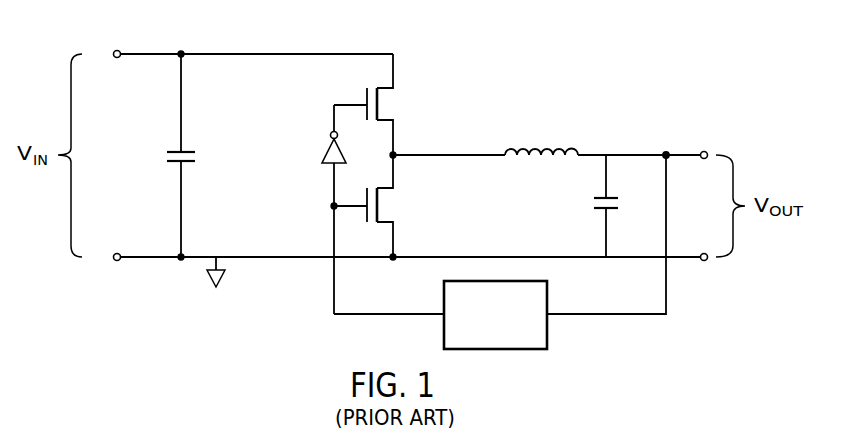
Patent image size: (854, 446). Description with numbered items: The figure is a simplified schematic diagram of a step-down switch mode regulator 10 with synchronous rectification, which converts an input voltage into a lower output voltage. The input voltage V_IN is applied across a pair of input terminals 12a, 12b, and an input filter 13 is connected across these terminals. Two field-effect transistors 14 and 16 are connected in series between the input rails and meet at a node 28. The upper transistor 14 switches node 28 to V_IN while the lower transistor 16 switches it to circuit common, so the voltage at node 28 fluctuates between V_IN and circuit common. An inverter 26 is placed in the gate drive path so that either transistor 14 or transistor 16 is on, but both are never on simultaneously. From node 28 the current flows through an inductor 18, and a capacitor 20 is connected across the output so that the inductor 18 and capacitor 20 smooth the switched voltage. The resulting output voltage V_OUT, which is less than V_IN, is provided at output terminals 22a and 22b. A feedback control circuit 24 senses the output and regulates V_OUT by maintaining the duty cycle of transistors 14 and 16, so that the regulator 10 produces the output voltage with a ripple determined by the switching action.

The step-down switch mode regulator 10 is at (540, 54).
The input terminal 12a is at (110, 44).
The input terminal 12b is at (110, 269).
The input filter 13 is at (196, 153).
The field-effect transistor 14 is at (386, 99).
The field-effect transistor 16 is at (386, 206).
The inductor 18 is at (545, 143).
The capacitor 20 is at (592, 201).
The output terminal 22a is at (707, 147).
The output terminal 22b is at (707, 262).
The feedback control circuit 24 is at (550, 337).
The inverter 26 is at (322, 149).
The node 28 is at (398, 154).